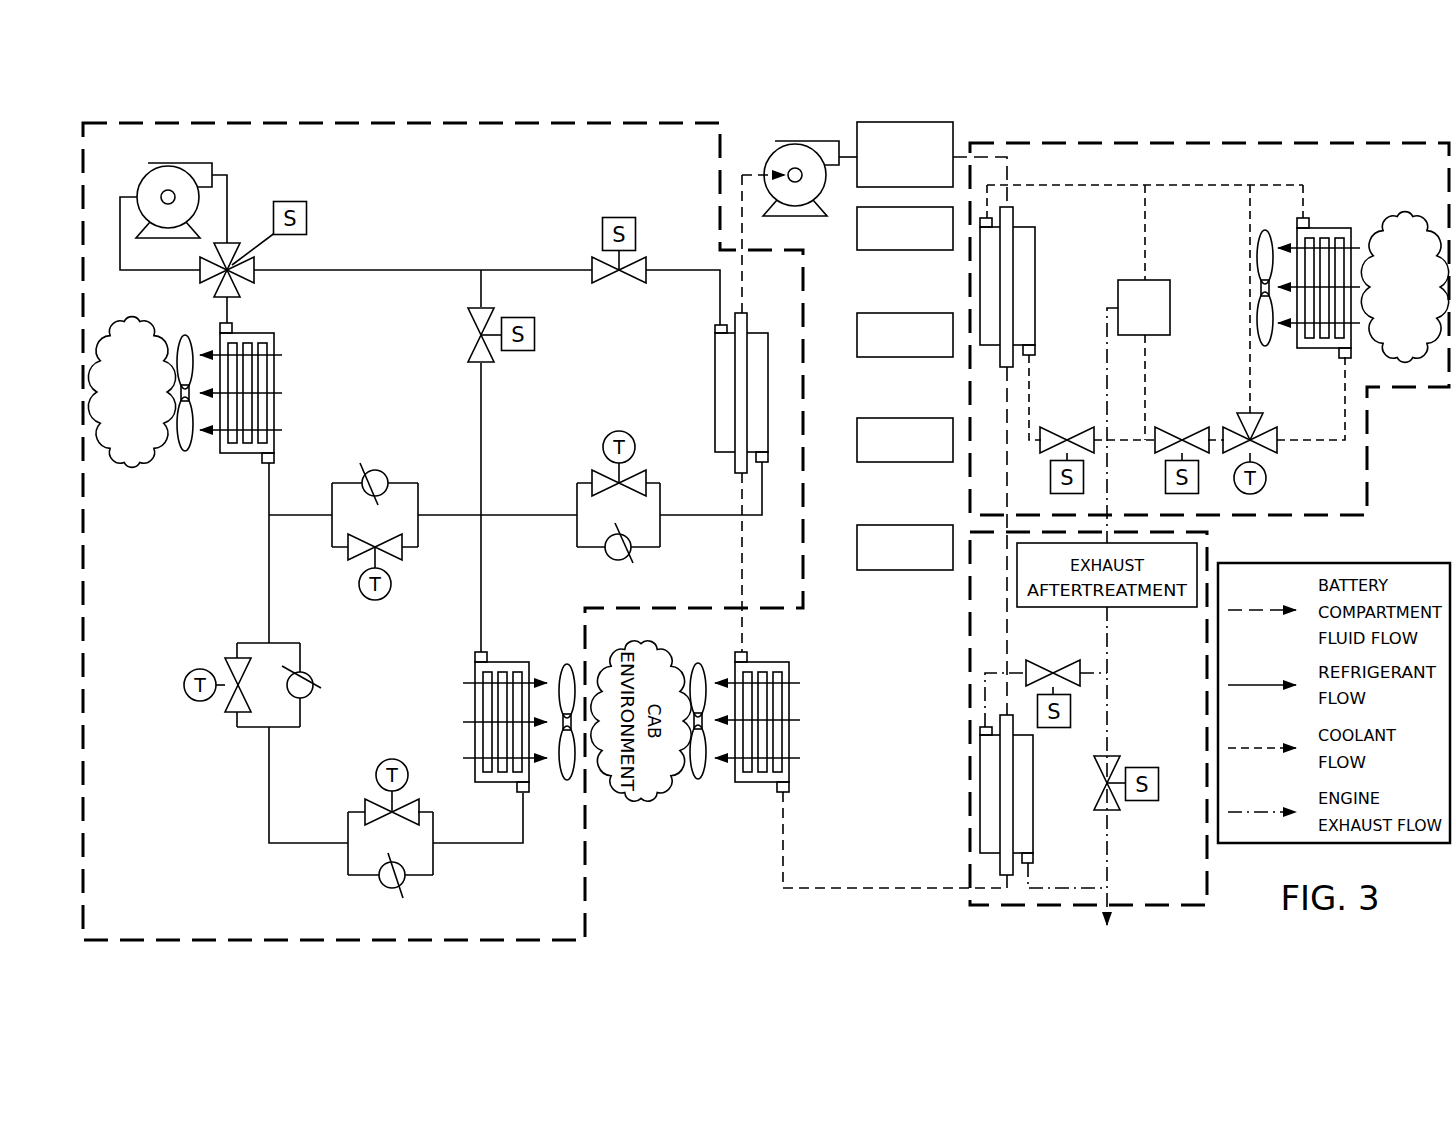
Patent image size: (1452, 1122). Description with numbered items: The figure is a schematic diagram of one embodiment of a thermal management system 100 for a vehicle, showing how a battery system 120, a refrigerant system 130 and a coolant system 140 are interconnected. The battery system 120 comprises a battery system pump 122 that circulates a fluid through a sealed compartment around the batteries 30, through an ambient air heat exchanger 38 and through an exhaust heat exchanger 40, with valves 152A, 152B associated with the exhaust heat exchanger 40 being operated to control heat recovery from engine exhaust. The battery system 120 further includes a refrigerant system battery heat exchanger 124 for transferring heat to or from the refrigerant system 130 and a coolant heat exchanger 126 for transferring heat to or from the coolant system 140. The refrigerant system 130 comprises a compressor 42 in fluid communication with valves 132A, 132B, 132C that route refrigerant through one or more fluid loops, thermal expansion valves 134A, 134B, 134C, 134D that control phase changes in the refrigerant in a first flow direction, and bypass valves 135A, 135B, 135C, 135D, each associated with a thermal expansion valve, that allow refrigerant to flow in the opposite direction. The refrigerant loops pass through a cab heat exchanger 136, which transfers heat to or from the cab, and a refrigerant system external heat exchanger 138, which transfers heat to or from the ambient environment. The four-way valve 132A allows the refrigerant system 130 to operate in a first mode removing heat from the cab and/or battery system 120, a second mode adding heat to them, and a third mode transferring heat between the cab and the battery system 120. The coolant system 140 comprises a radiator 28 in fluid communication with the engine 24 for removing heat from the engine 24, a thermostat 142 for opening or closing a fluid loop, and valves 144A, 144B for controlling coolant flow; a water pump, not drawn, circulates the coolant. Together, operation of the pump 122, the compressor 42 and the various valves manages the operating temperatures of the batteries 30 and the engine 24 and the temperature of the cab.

The thermal management system 100 is at (1157, 118).
The battery system 120 is at (907, 122).
The battery system pump 122 is at (792, 145).
The refrigerant system battery heat exchanger 124 is at (715, 387).
The coolant heat exchanger 126 is at (1036, 292).
The refrigerant system 130 is at (322, 122).
The four-way valve 132A is at (237, 287).
The valve 132B is at (468, 322).
The valve 132C is at (608, 282).
The thermal expansion valve 134A is at (352, 555).
The thermal expansion valve 134B is at (232, 712).
The thermal expansion valve 134C is at (593, 473).
The thermal expansion valve 134D is at (365, 802).
The bypass valve 135A is at (388, 470).
The bypass valve 135B is at (312, 698).
The bypass valve 135C is at (610, 560).
The bypass valve 135D is at (380, 887).
The cab heat exchanger 136 is at (500, 783).
The refrigerant system external heat exchanger 138 is at (248, 456).
The coolant system 140 is at (1325, 143).
The thermostat 142 is at (1277, 448).
The valve 144A is at (1057, 427).
The valve 144B is at (1192, 430).
The valve 152A is at (1042, 660).
The valve 152B is at (1117, 810).
The engine 24 is at (1130, 322).
The radiator 28 is at (1323, 227).
The batteries 30 is at (908, 252).
The ambient air heat exchanger 38 is at (760, 783).
The exhaust heat exchanger 40 is at (1035, 825).
The compressor 42 is at (160, 172).